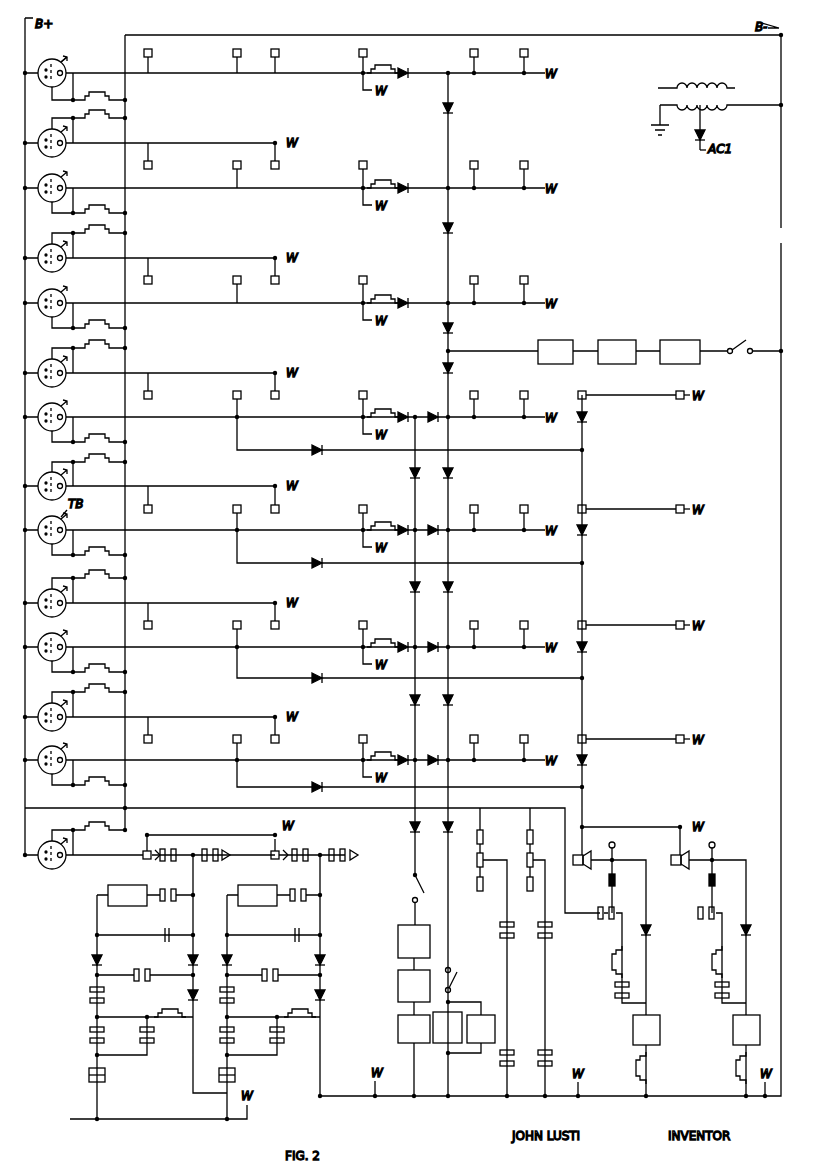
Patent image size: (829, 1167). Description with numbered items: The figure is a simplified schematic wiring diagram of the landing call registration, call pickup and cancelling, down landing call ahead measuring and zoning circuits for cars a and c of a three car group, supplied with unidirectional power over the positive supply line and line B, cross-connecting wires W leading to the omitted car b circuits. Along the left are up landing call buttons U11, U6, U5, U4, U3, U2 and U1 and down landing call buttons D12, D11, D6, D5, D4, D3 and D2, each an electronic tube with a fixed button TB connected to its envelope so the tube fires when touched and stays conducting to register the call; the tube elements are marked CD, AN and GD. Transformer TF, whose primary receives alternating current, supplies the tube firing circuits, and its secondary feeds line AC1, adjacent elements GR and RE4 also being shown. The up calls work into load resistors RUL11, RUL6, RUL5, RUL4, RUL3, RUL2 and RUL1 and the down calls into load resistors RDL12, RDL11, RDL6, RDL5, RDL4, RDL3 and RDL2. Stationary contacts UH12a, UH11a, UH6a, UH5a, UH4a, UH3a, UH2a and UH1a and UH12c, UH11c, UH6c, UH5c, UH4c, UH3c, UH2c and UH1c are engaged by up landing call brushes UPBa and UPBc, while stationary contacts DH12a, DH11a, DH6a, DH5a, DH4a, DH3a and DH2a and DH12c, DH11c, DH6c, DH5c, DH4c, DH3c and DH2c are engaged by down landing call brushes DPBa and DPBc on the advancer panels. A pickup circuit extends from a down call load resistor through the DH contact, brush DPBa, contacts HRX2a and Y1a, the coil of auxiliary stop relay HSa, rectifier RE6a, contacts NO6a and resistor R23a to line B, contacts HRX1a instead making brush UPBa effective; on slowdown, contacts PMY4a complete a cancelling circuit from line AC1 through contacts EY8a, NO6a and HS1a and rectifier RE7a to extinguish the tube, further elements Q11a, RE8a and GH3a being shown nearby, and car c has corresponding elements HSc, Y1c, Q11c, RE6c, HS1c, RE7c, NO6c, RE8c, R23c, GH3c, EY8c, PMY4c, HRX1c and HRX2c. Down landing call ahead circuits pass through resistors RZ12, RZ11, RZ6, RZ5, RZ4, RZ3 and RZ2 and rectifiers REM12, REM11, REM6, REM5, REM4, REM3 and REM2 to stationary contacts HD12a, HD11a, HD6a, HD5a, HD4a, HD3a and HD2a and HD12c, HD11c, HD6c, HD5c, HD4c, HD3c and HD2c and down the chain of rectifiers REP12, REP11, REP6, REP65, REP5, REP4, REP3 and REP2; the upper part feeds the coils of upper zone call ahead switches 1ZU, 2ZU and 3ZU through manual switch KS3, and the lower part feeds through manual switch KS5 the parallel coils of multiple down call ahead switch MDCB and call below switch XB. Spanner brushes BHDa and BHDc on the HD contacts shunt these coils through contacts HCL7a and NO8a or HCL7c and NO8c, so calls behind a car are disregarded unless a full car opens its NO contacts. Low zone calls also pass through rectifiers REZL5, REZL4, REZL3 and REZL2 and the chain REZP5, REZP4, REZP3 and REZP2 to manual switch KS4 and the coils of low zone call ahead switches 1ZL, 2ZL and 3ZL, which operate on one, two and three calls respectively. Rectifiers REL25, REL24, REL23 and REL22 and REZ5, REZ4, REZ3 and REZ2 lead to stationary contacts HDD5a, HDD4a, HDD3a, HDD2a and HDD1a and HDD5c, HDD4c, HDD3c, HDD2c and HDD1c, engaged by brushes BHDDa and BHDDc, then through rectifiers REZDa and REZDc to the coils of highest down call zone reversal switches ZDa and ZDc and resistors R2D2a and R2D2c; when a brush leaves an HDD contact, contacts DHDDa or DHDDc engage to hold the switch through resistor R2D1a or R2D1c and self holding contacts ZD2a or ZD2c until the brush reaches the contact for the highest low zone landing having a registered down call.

The transformer TF is at (662, 100).
The ground GR is at (654, 133).
The rectifier RE4 is at (704, 135).
The down landing call button D12 is at (48, 64).
The fixed button TB is at (68, 57).
The load resistor RDL12 is at (89, 87).
The stationary contact UH12a is at (170, 56).
The stationary contact DH12a is at (233, 57).
The stationary contact UH12c is at (297, 56).
The stationary contact DH12c is at (359, 56).
The resistor RZ12 is at (385, 62).
The rectifier REM12 is at (406, 72).
The stationary contact HD12a is at (472, 54).
The stationary contact HD12c is at (527, 55).
The rectifier REP12 is at (452, 107).
The up landing call button U11 is at (48, 134).
The load resistor RUL11 is at (89, 126).
The down landing call button D11 is at (48, 179).
The load resistor RDL11 is at (89, 201).
The stationary contact UH11a is at (170, 156).
The stationary contact DH11a is at (233, 170).
The stationary contact UH11c is at (297, 156).
The stationary contact DH11c is at (359, 170).
The resistor RZ11 is at (385, 177).
The rectifier REM11 is at (406, 187).
The stationary contact HD11a is at (480, 168).
The stationary contact HD11c is at (537, 168).
The rectifier REP11 is at (452, 227).
The up landing call button U6 is at (48, 249).
The load resistor RUL6 is at (89, 241).
The down landing call button D6 is at (48, 294).
The load resistor RDL6 is at (89, 316).
The stationary contact UH6a is at (167, 271).
The stationary contact DH6a is at (233, 285).
The stationary contact UH6c is at (293, 271).
The stationary contact DH6c is at (359, 285).
The resistor RZ6 is at (383, 292).
The rectifier REM6 is at (407, 299).
The stationary contact HD6a is at (478, 282).
The stationary contact HD6c is at (533, 282).
The rectifier REP6 is at (452, 327).
The upper zone call ahead switch 1ZU is at (555, 352).
The upper zone call ahead switch 2ZU is at (617, 352).
The upper zone call ahead switch 3ZU is at (680, 352).
The manual switch KS3 is at (739, 338).
The rectifier REP65 is at (452, 367).
The up landing call button U5 is at (48, 364).
The load resistor RUL5 is at (89, 356).
The down landing call button D5 is at (48, 408).
The load resistor RDL5 is at (89, 430).
The stationary contact UH5a is at (167, 386).
The stationary contact DH5a is at (233, 400).
The stationary contact UH5c is at (293, 386).
The stationary contact DH5c is at (359, 400).
The resistor RZ5 is at (383, 406).
The rectifier REZL5 is at (402, 411).
The rectifier REM5 is at (432, 411).
The stationary contact HD5a is at (482, 396).
The stationary contact HD5c is at (531, 396).
The stationary contact HDD5a is at (627, 385).
The stationary contact HDD5c is at (686, 385).
The rectifier REZ5 is at (587, 417).
The rectifier REL25 is at (308, 449).
The rectifier REZP5 is at (409, 474).
The rectifier REP5 is at (452, 472).
The up landing call button U4 is at (48, 477).
The load resistor RUL4 is at (89, 470).
The down landing call button D4 is at (48, 521).
The cathode CD is at (64, 529).
The anode AN is at (45, 540).
The grid GD is at (58, 547).
The load resistor RDL4 is at (89, 543).
The stationary contact UH4a is at (167, 499).
The stationary contact DH4a is at (233, 514).
The stationary contact UH4c is at (293, 499).
The stationary contact DH4c is at (359, 514).
The resistor RZ4 is at (383, 519).
The rectifier REZL4 is at (402, 524).
The rectifier REM4 is at (432, 524).
The stationary contact HD4a is at (482, 510).
The stationary contact HD4c is at (531, 510).
The stationary contact HDD4a is at (627, 499).
The stationary contact HDD4c is at (686, 499).
The rectifier REZ4 is at (587, 530).
The rectifier REL24 is at (310, 562).
The rectifier REZP4 is at (409, 588).
The rectifier REP4 is at (452, 587).
The up landing call button U3 is at (48, 594).
The load resistor RUL3 is at (89, 586).
The down landing call button D3 is at (48, 638).
The load resistor RDL3 is at (89, 660).
The stationary contact UH3a is at (167, 616).
The stationary contact DH3a is at (233, 630).
The stationary contact UH3c is at (293, 616).
The stationary contact DH3c is at (359, 630).
The resistor RZ3 is at (383, 636).
The rectifier REZL3 is at (402, 641).
The rectifier REM3 is at (432, 641).
The stationary contact HD3a is at (482, 626).
The stationary contact HD3c is at (531, 626).
The stationary contact HDD3a is at (627, 615).
The stationary contact HDD3c is at (686, 615).
The rectifier REZ3 is at (587, 647).
The rectifier REL23 is at (312, 677).
The rectifier REZP3 is at (409, 701).
The rectifier REP3 is at (452, 700).
The up landing call button U2 is at (48, 708).
The load resistor RUL2 is at (89, 700).
The down landing call button D2 is at (48, 751).
The load resistor RDL2 is at (89, 773).
The stationary contact UH2a is at (167, 730).
The stationary contact DH2a is at (233, 744).
The stationary contact UH2c is at (293, 730).
The stationary contact DH2c is at (359, 744).
The resistor RZ2 is at (383, 749).
The rectifier REZL2 is at (402, 754).
The rectifier REM2 is at (432, 754).
The stationary contact HD2a is at (475, 739).
The stationary contact HD2c is at (528, 739).
The stationary contact HDD2a is at (627, 729).
The stationary contact HDD2c is at (686, 729).
The rectifier REZ2 is at (587, 760).
The rectifier REL22 is at (312, 786).
The rectifier REZP2 is at (411, 830).
The rectifier REP2 is at (452, 828).
The up landing call button U1 is at (48, 842).
The load resistor RUL1 is at (89, 838).
The stationary contact UH1a is at (144, 860).
The up landing call brush UPBa is at (159, 865).
The contacts of auxiliary highest call reversal switch HRX1a is at (170, 847).
The contacts of auxiliary highest call reversal switch HRX2a is at (215, 847).
The down landing call brush DPBa is at (219, 866).
The stationary contact UH1c is at (271, 853).
The up landing call brush UPBc is at (291, 865).
The contacts of auxiliary highest call reversal switch HRX1c is at (305, 845).
The down landing call brush DPBc is at (347, 866).
The contacts of auxiliary highest call reversal switch HRX2c is at (341, 847).
The auxiliary stop relay HSa is at (127, 895).
The contacts of down call reversal switch Y1a is at (168, 902).
The capacitor Q11a is at (162, 934).
The rectifier RE6a is at (92, 959).
The contacts of auxiliary stop relay HS1a is at (127, 969).
The rectifier RE7a is at (174, 959).
The contacts of non-stop relay NO6a is at (89, 996).
The rectifier RE8a is at (187, 996).
The resistor R23a is at (152, 1008).
The resistor GH3a is at (89, 1036).
The contacts of auxiliary speed switch EY8a is at (152, 1036).
The contacts of pawl magnet relay PMY4a is at (105, 1075).
The line AC1 is at (26, 1119).
The auxiliary stop relay HSc is at (257, 895).
The contacts of down call reversal switch Y1c is at (298, 902).
The capacitor Q11c is at (292, 934).
The rectifier RE6c is at (231, 958).
The contacts of auxiliary stop relay HS1c is at (273, 969).
The rectifier RE7c is at (325, 961).
The contacts of non-stop relay NO6c is at (245, 995).
The rectifier RE8c is at (338, 994).
The resistor R23c is at (280, 1008).
The resistor GH3c is at (245, 1035).
The contacts of auxiliary speed switch EY8c is at (281, 1037).
The contacts of pawl magnet relay PMY4c is at (235, 1075).
The manual switch KS4 is at (431, 898).
The low zone call ahead switch 1ZL is at (414, 941).
The low zone call ahead switch 2ZL is at (414, 986).
The low zone call ahead switch 3ZL is at (414, 1029).
The manual switch KS5 is at (464, 979).
The multiple down call ahead switch MDCB is at (447, 1027).
The call below switch XB is at (471, 1027).
The spanner brush BHDa is at (475, 860).
The contacts HCL7a is at (504, 940).
The contacts of non-stop relay NO8a is at (514, 1056).
The spanner brush BHDc is at (534, 849).
The contacts HCL7c is at (552, 930).
The contacts of non-stop relay NO8c is at (550, 1056).
The stationary contact HDD1a is at (585, 850).
The stationary contact HDD1c is at (670, 862).
The brush BHDDa is at (615, 845).
The brush BHDDc is at (716, 846).
The contacts DHDDa is at (600, 905).
The contacts DHDDc is at (698, 905).
The rectifier REZDa is at (651, 929).
The rectifier REZDc is at (741, 932).
The resistor R2D1a is at (612, 962).
The resistor R2D1c is at (712, 966).
The self holding contacts ZD2a is at (614, 990).
The self holding contacts ZD2c is at (714, 990).
The highest down call zone reversal switch ZDa is at (646, 1030).
The highest down call zone reversal switch ZDc is at (746, 1030).
The resistor R2D2a is at (650, 1069).
The resistor R2D2c is at (740, 1075).